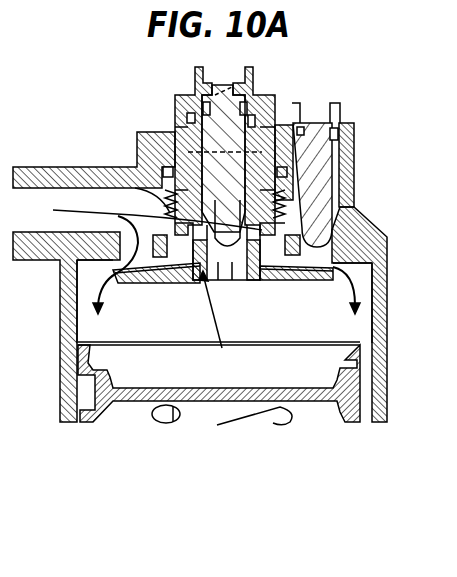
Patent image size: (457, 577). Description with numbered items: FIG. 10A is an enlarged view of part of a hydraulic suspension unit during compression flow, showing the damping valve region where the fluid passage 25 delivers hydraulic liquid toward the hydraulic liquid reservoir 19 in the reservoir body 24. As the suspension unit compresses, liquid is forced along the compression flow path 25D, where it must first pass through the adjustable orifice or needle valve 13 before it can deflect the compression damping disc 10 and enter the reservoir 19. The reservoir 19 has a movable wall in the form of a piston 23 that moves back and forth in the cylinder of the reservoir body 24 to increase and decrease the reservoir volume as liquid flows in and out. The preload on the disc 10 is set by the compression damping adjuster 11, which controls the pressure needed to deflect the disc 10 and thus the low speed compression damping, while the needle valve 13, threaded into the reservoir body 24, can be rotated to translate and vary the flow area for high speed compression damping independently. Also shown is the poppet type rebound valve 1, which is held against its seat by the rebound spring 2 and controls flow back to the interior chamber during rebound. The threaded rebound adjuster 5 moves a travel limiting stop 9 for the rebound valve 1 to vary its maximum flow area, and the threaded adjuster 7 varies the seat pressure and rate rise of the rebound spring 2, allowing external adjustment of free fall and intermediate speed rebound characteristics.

The rebound valve 1 is at (220, 295).
The rebound spring 2 is at (128, 167).
The threaded rebound adjuster 5 is at (247, 88).
The threaded adjuster 7 is at (172, 215).
The travel limiting stop 9 is at (240, 283).
The disc 10 is at (115, 285).
The compression damping adjuster 11 is at (262, 287).
The needle valve 13 is at (332, 108).
The hydraulic liquid reservoir 19 is at (93, 322).
The piston 23 is at (357, 408).
The reservoir body 24 is at (354, 178).
The fluid passage 25 is at (53, 211).
The compression flow path 25D is at (356, 202).